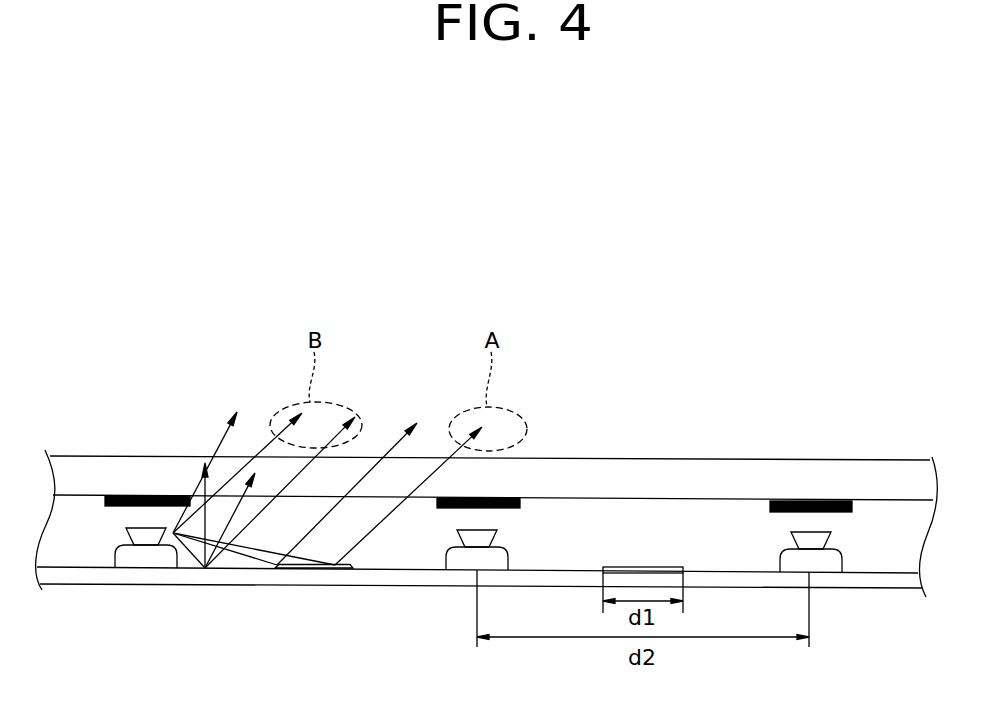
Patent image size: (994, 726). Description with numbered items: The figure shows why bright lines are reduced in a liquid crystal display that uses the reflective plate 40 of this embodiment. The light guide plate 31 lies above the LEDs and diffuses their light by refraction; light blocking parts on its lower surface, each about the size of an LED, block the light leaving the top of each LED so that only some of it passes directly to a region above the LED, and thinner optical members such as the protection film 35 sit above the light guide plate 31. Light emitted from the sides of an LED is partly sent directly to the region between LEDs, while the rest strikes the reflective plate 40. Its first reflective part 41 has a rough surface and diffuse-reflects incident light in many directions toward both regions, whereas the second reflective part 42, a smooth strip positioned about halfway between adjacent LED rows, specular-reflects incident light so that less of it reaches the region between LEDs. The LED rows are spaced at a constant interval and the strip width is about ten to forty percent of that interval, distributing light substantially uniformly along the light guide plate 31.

The light guide plate 31 is at (655, 470).
The protection film 35 is at (818, 502).
The reflective plate 40 is at (849, 606).
The first reflective part 41 is at (232, 570).
The second reflective part 42 is at (315, 570).